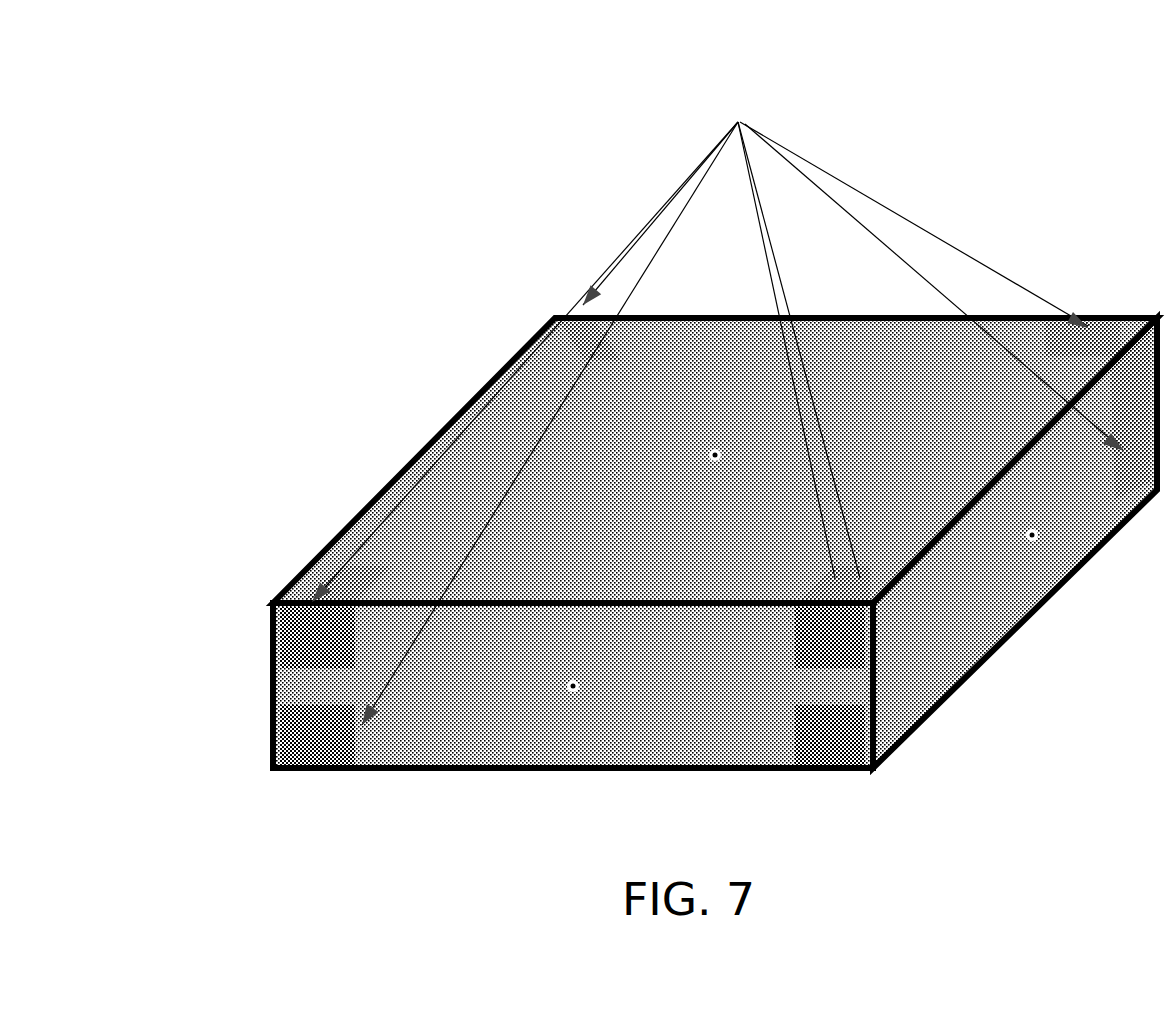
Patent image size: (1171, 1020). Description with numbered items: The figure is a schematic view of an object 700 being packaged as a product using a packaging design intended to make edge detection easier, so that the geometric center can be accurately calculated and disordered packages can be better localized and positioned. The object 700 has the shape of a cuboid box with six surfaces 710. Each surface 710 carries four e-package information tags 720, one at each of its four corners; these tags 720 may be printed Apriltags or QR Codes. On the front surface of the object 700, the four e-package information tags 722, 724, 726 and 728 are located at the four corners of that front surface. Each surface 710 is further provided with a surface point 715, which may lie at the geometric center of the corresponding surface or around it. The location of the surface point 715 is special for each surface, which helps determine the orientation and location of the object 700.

The object 700 is at (222, 30).
The surface 710 is at (442, 728).
The surface point 715 is at (568, 698).
The e-package information tag 720 is at (718, 384).
The e-package information tag 722 is at (270, 617).
The e-package information tag 724 is at (270, 740).
The e-package information tag 726 is at (800, 648).
The e-package information tag 728 is at (800, 735).